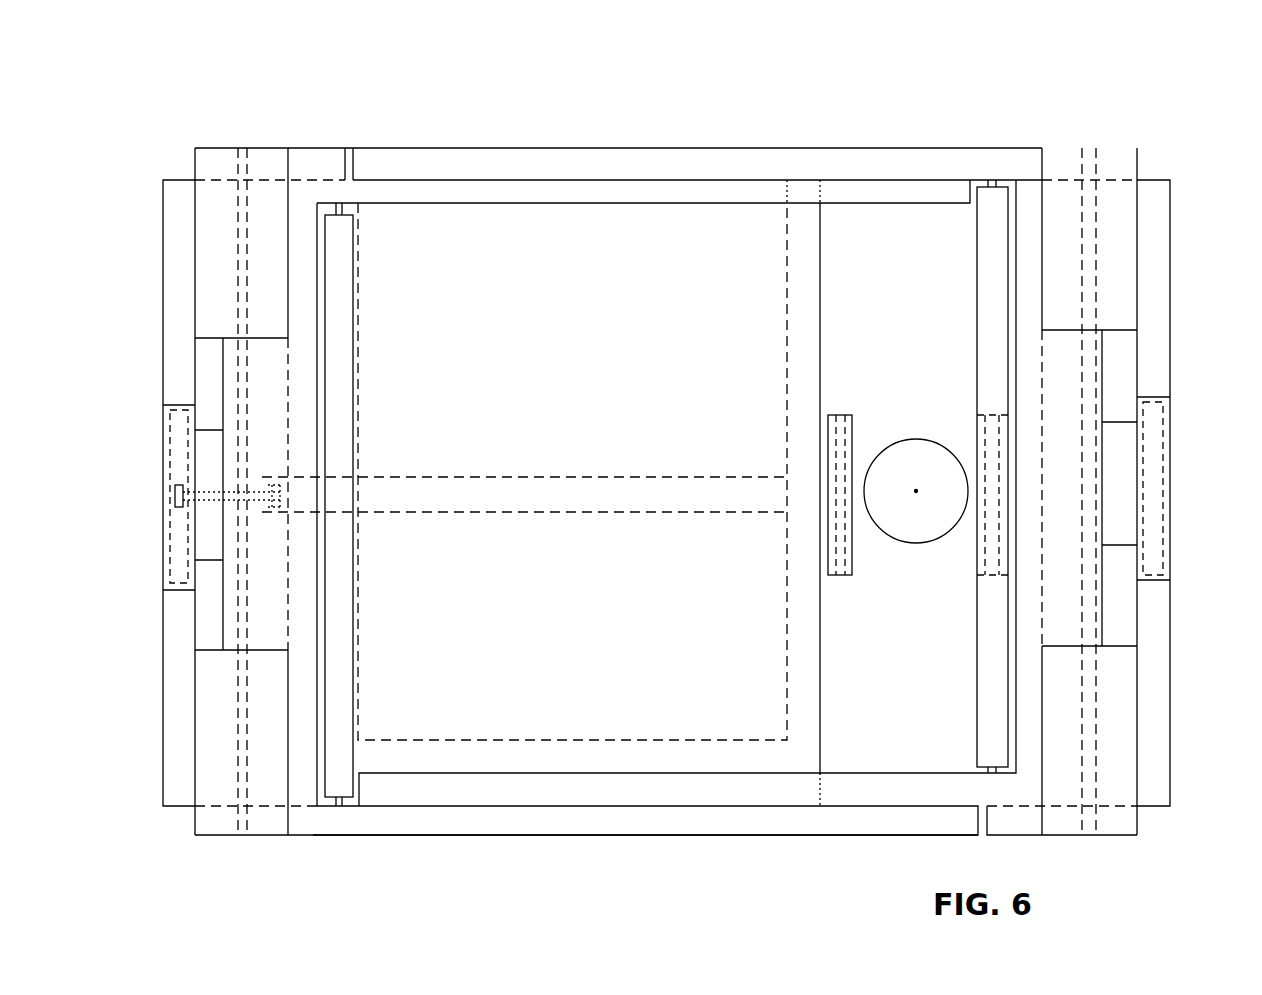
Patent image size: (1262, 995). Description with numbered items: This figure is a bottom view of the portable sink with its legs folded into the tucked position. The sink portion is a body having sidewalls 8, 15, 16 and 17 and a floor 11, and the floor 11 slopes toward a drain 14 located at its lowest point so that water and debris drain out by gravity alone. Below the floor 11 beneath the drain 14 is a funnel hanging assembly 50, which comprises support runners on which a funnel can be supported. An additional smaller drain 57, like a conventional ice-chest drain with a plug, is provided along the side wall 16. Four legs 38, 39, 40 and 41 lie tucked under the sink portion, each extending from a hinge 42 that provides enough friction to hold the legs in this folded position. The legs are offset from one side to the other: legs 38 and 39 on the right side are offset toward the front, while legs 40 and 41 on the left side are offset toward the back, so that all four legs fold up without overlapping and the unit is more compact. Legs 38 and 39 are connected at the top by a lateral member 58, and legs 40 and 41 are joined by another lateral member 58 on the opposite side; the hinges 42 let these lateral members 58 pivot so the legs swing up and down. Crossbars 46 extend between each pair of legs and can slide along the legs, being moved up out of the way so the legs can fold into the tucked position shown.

The sidewall 8 is at (741, 95).
The leg 38 is at (405, 148).
The hinge 42 is at (250, 170).
The lateral member 58 is at (210, 276).
The sidewall 16 is at (160, 415).
The sidewall 15 is at (1175, 370).
The smaller drain 57 is at (180, 495).
The leg 40 is at (422, 207).
The leg 39 is at (553, 783).
The crossbar 46 is at (355, 403).
The floor 11 is at (639, 410).
The funnel hanging assembly 50 is at (841, 413).
The drain 14 is at (916, 491).
The leg 41 is at (437, 838).
The sidewall 17 is at (790, 838).